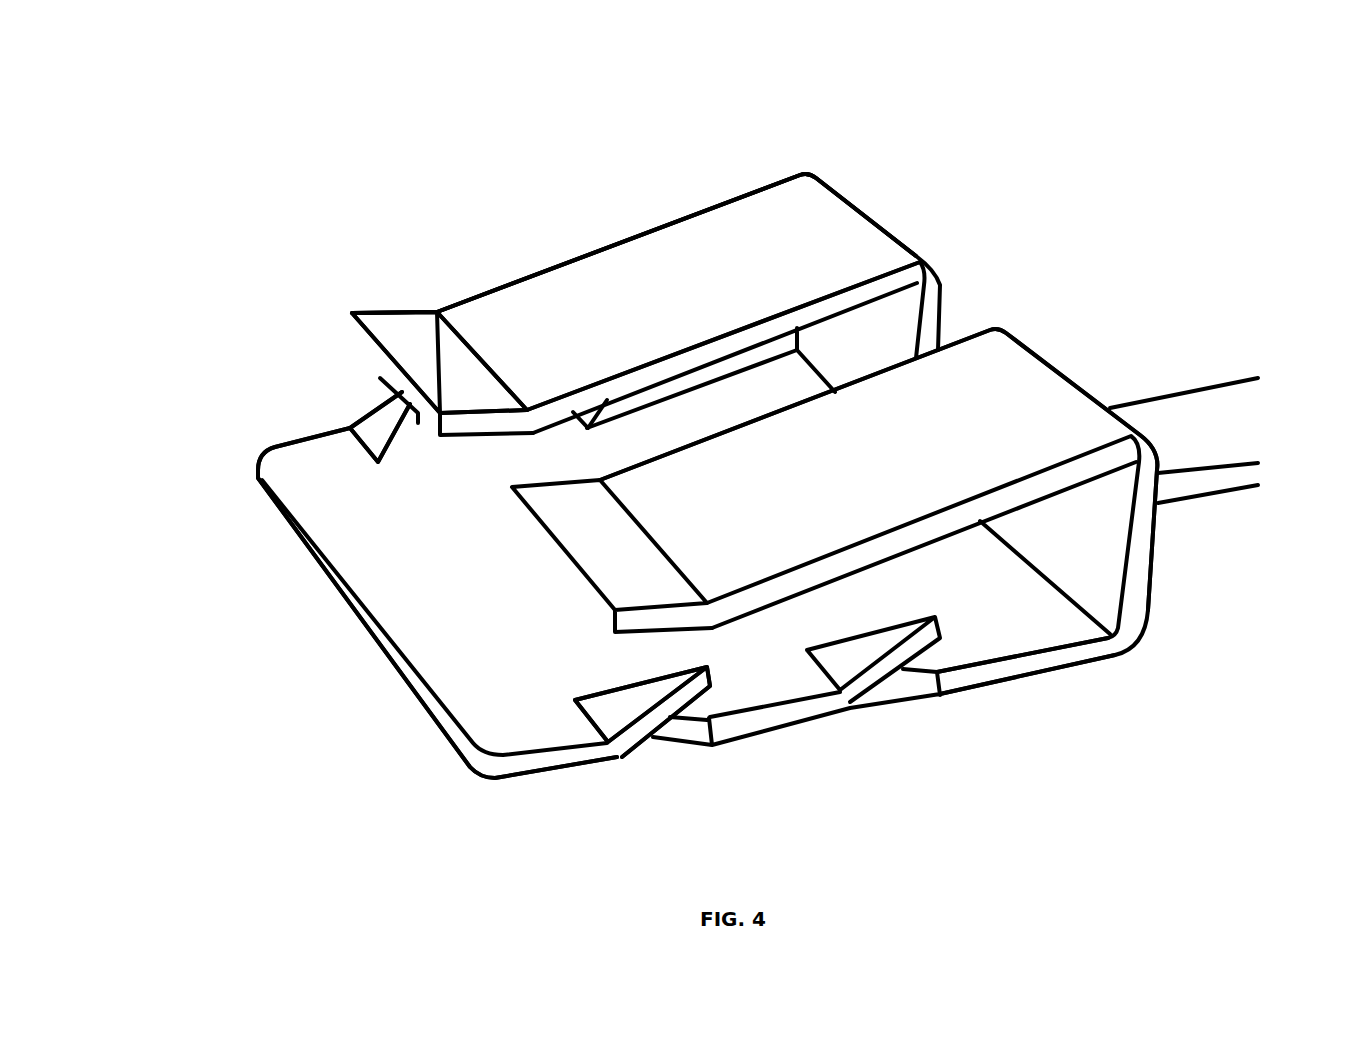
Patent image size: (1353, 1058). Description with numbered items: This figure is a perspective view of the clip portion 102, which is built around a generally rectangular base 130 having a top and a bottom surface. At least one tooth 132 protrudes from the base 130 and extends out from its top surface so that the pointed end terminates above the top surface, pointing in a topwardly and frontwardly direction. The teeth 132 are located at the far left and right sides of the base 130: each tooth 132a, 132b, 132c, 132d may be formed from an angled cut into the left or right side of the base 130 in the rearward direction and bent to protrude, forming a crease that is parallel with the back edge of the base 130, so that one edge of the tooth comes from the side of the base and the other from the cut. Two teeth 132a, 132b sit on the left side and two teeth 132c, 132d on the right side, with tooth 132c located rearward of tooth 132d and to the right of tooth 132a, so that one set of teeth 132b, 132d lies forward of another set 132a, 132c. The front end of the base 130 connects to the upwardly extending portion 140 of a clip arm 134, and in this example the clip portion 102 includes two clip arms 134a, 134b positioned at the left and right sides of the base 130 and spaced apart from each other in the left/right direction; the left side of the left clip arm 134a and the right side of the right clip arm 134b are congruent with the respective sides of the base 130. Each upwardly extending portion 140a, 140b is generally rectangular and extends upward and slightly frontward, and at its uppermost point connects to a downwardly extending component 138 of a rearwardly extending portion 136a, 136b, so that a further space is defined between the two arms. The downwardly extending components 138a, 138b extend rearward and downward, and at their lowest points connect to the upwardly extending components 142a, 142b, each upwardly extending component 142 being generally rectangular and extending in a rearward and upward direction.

The clip portion 102 is at (1272, 810).
The base 130 is at (425, 637).
The tooth 132 is at (284, 377).
The tooth 132a is at (380, 427).
The tooth 132b is at (600, 413).
The tooth 132c is at (631, 707).
The tooth 132d is at (867, 667).
The clip arm 134 is at (1067, 138).
The left clip arm 134a is at (674, 264).
The right clip arm 134b is at (873, 476).
The rearwardly extending portion 136a is at (378, 132).
The rearwardly extending portion 136b is at (890, 604).
The downwardly extending component 138 is at (528, 160).
The downwardly extending component 138a is at (672, 262).
The downwardly extending component 138b is at (937, 456).
The upwardly extending portion 140 is at (1148, 353).
The upwardly extending portion 140a is at (946, 310).
The upwardly extending portion 140b is at (1143, 539).
The upwardly extending component 142 is at (313, 240).
The upwardly extending component 142a is at (410, 347).
The upwardly extending component 142b is at (660, 585).